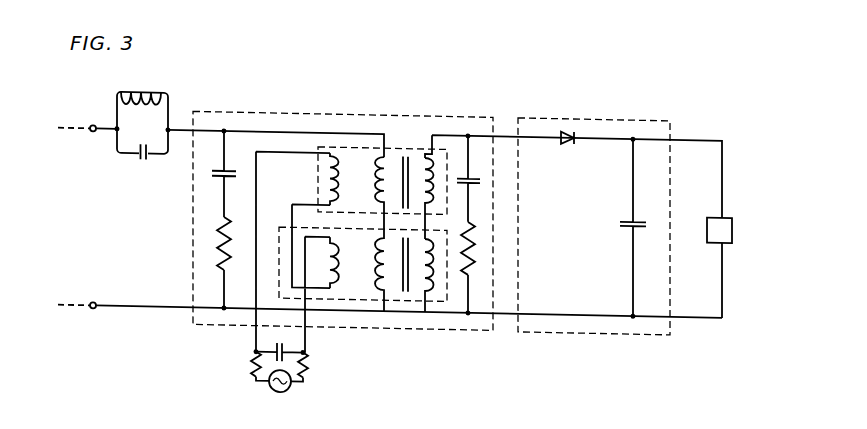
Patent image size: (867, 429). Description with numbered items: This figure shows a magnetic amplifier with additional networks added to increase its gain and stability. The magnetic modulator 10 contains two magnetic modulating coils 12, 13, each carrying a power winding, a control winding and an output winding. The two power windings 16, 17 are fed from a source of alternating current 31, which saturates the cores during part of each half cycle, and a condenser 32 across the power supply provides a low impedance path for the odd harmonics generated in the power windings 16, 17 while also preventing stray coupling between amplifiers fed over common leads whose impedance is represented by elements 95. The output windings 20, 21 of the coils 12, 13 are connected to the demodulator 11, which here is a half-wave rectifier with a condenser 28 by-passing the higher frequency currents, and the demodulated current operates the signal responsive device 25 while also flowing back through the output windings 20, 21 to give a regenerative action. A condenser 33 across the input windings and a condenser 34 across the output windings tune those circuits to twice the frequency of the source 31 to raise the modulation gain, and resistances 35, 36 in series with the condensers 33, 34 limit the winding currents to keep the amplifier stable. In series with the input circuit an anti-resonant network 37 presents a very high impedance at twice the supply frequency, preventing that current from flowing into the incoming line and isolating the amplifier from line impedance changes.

The magnetic modulator 10 is at (236, 112).
The demodulator 11 is at (598, 112).
The coil 12 is at (318, 181).
The coil 13 is at (282, 226).
The power winding 16 is at (336, 151).
The power winding 17 is at (340, 286).
The output winding 20 is at (425, 153).
The output winding 21 is at (425, 274).
The signal responsive device 25 is at (733, 216).
The condenser 28 is at (619, 214).
The source of alternating current 31 is at (291, 389).
The condenser 32 is at (277, 347).
The condenser 33 is at (212, 174).
The condenser 34 is at (481, 176).
The resistance 35 is at (216, 238).
The resistance 36 is at (474, 248).
The anti-resonant network 37 is at (133, 137).
The common lead impedance elements 95 is at (252, 370).